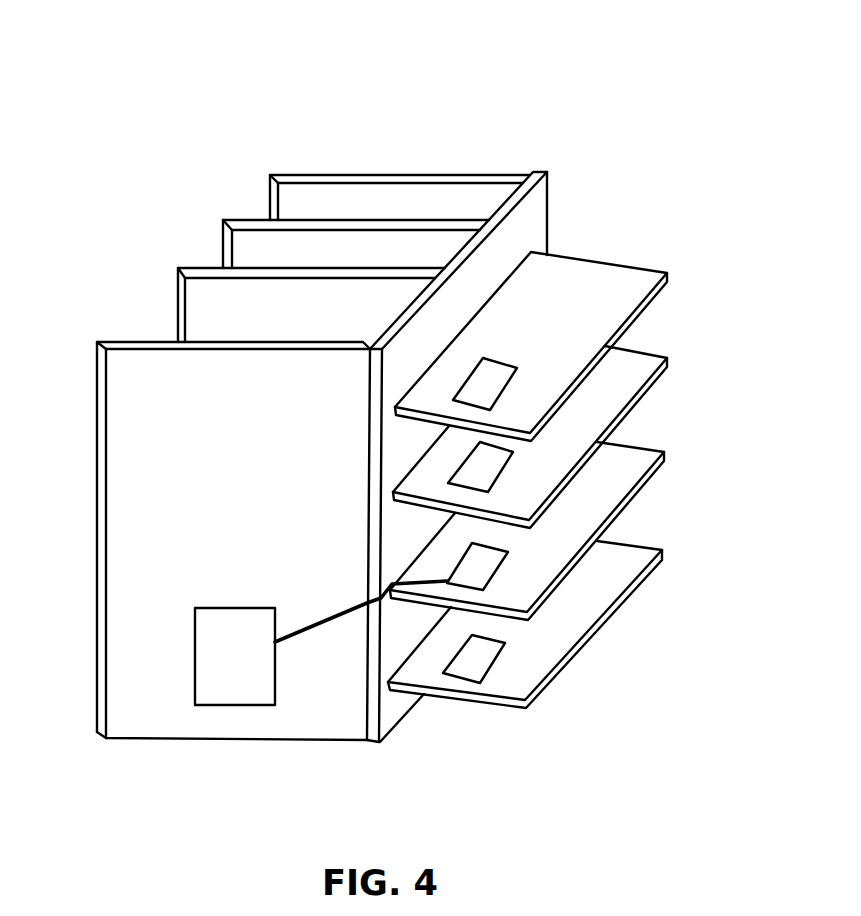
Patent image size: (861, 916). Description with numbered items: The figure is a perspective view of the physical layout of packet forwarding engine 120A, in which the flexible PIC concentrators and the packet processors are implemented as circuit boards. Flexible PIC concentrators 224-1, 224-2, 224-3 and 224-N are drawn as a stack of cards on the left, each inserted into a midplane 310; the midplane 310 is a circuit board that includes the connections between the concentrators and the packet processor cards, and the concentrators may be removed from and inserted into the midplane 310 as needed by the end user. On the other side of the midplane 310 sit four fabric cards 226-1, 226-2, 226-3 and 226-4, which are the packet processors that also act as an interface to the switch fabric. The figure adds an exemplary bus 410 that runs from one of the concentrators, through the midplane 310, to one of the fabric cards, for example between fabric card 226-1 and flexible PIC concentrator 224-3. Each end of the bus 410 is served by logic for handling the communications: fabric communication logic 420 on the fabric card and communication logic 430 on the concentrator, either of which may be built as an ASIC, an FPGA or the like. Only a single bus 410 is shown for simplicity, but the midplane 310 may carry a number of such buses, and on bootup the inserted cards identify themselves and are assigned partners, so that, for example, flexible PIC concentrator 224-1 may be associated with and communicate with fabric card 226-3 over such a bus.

The packet forwarding engine 120A is at (121, 59).
The flexible PIC concentrator 224-1 is at (98, 344).
The flexible PIC concentrator 224-2 is at (178, 270).
The flexible PIC concentrator 224-3 is at (223, 222).
The flexible PIC concentrator 224-N is at (270, 177).
The midplane 310 is at (547, 172).
The fabric card 226-1 is at (678, 260).
The fabric card 226-2 is at (667, 358).
The fabric card 226-3 is at (673, 441).
The fabric card 226-4 is at (662, 550).
The bus 410 is at (318, 622).
The fabric communication logic 420 is at (508, 552).
The communication logic 430 is at (276, 704).